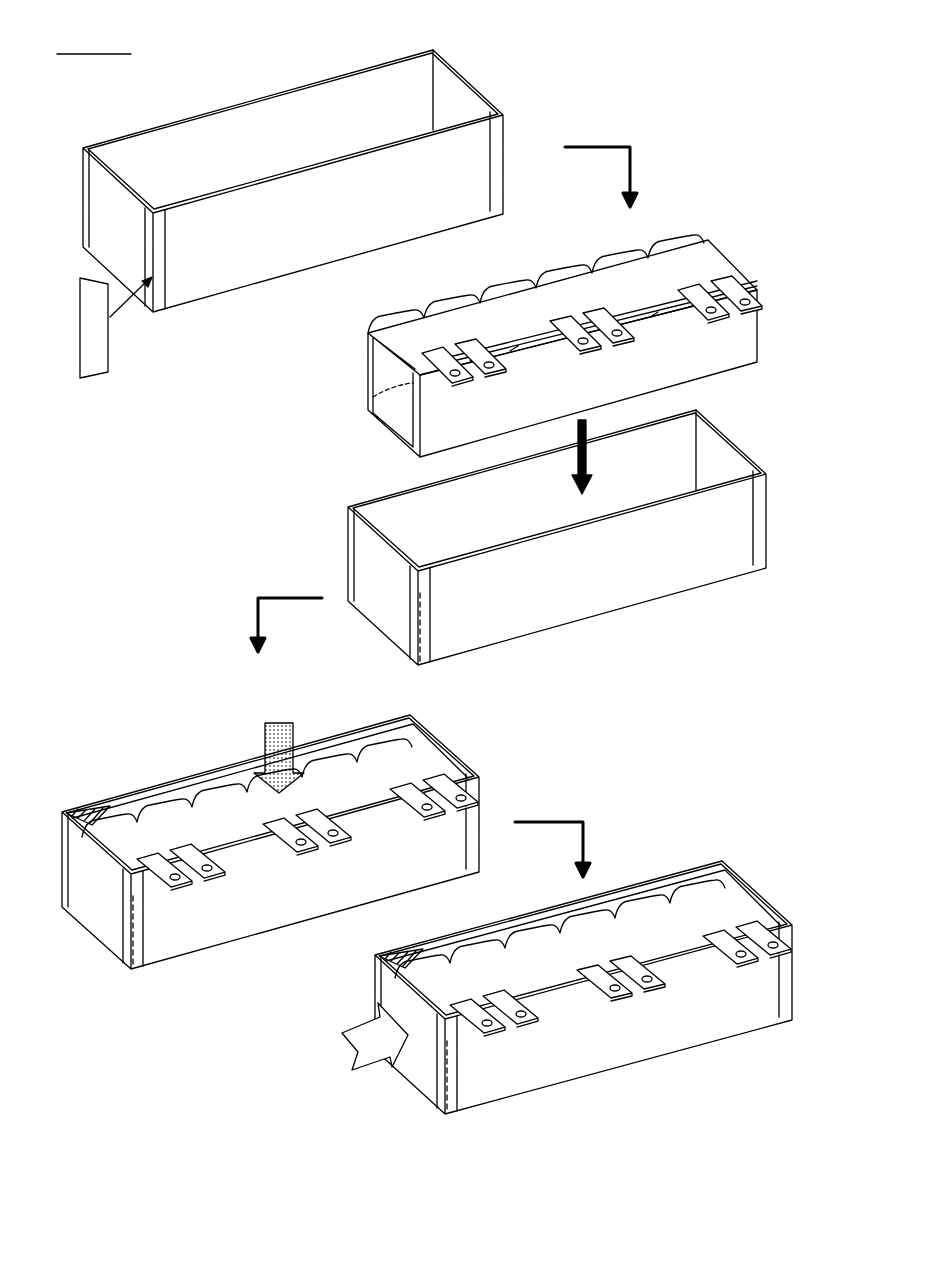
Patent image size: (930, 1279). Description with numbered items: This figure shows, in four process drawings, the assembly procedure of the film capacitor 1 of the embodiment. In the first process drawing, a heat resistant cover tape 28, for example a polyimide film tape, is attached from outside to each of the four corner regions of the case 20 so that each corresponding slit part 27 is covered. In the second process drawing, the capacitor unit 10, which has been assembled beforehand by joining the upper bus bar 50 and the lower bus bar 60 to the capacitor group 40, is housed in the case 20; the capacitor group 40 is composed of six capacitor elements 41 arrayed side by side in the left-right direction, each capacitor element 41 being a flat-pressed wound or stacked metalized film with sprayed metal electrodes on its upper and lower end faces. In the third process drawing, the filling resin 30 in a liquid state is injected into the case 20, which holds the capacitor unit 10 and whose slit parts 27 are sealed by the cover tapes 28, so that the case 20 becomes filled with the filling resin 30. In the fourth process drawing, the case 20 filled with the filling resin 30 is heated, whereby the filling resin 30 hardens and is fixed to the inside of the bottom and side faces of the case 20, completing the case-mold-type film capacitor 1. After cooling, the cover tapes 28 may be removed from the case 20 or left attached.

The film capacitor 1 is at (424, 578).
The capacitor unit 10 is at (557, 953).
The case 20 is at (758, 883).
The slit part 27 is at (706, 862).
The cover tape 28 is at (100, 340).
The filling resin 30 is at (402, 953).
The capacitor group 40 is at (588, 263).
The capacitor element 41 is at (675, 243).
The upper bus bar 50 is at (520, 308).
The lower bus bar 60 is at (743, 343).